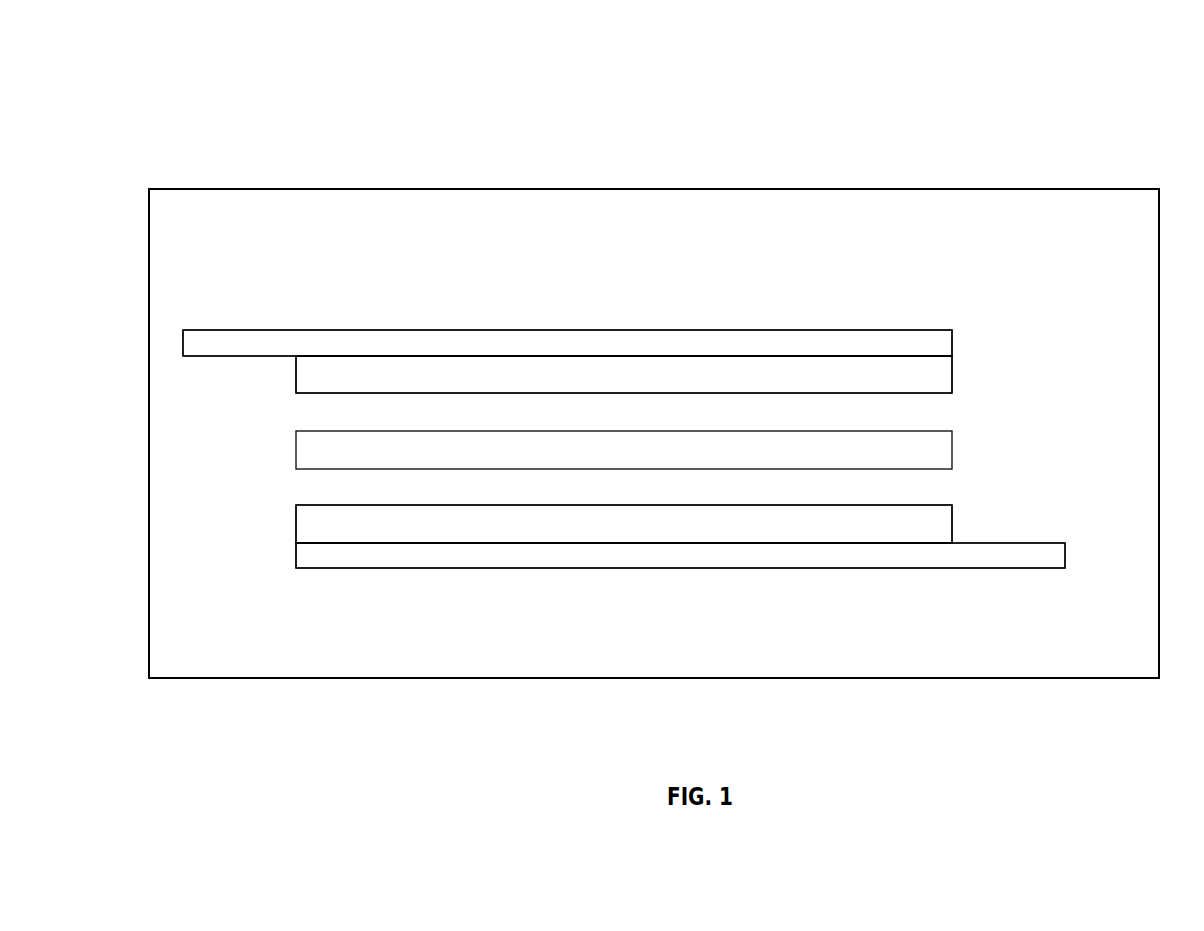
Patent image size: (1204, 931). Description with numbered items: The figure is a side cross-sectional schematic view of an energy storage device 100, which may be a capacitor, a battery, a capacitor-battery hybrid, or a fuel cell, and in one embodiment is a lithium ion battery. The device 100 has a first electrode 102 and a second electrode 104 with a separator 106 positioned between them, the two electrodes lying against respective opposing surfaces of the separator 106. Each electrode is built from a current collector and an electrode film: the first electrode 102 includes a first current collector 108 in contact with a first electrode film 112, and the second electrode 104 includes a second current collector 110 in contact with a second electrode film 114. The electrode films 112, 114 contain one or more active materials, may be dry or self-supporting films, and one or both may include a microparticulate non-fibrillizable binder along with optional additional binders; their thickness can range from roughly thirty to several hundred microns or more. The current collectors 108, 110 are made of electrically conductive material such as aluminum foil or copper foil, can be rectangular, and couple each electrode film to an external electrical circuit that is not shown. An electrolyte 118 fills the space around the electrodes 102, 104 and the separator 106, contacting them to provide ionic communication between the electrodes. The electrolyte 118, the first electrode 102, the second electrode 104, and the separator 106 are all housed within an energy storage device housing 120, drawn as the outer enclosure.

The energy storage device 100 is at (215, 108).
The first electrode 102 is at (1056, 311).
The second electrode 104 is at (214, 487).
The separator 106 is at (952, 445).
The first current collector 108 is at (948, 342).
The second current collector 110 is at (296, 556).
The first electrode film 112 is at (952, 375).
The second electrode film 114 is at (296, 522).
The electrolyte 118 is at (1108, 214).
The energy storage device housing 120 is at (918, 189).